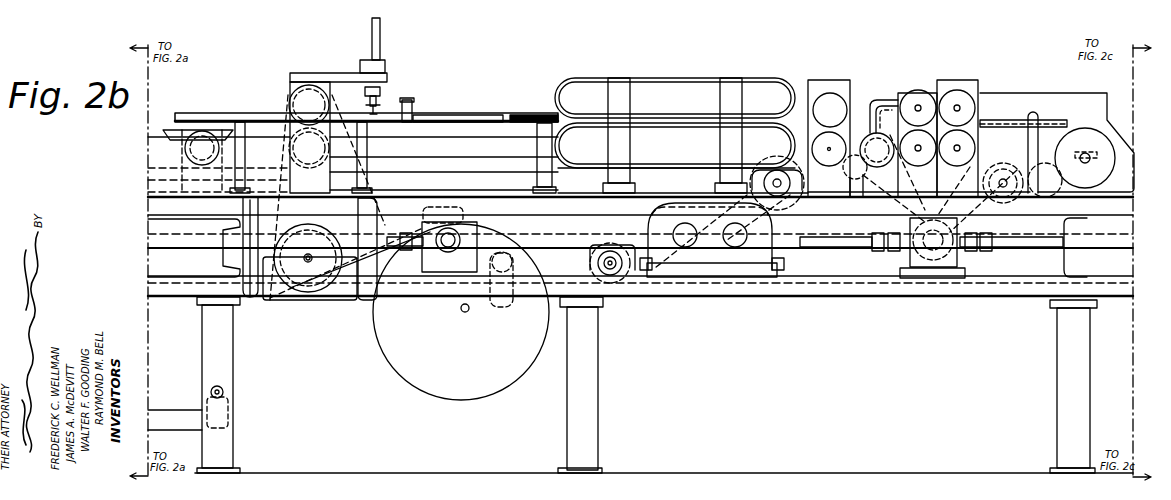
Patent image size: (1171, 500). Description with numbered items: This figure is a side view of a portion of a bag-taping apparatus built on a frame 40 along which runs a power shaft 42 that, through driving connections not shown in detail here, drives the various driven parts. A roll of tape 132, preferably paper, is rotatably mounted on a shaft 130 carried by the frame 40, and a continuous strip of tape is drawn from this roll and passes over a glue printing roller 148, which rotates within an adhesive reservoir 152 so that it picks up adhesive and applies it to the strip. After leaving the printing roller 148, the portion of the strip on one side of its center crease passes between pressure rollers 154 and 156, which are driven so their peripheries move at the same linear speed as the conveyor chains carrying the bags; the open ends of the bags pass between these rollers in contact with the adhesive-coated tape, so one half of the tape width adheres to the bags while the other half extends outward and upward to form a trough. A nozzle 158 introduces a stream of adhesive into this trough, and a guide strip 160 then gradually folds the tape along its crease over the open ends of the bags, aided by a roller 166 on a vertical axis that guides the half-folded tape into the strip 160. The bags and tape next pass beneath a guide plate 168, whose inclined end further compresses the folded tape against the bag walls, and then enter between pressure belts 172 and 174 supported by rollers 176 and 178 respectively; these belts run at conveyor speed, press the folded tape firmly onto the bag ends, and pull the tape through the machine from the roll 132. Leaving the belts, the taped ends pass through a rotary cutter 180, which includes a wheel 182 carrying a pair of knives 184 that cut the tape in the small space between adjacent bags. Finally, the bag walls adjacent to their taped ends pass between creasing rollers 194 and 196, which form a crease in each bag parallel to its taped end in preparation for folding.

The frame 40 is at (786, 297).
The power shaft 42 is at (1094, 250).
The shaft 130 is at (468, 312).
The roll of tape 132 is at (432, 392).
The glue printing roller 148 is at (311, 224).
The adhesive reservoir 152 is at (274, 298).
The pressure roller 154 is at (290, 100).
The pressure roller 156 is at (292, 152).
The nozzle 158 is at (371, 105).
The guide strip 160 is at (446, 115).
The roller 166 is at (412, 108).
The guide plate 168 is at (536, 115).
The pressure belt 172 is at (702, 78).
The pressure belt 174 is at (643, 164).
The rollers 176 is at (574, 82).
The rollers 178 is at (565, 145).
The rotary cutter 180 is at (846, 77).
The wheel 182 is at (853, 93).
The knives 184 is at (815, 131).
The creasing roller 194 is at (982, 98).
The creasing roller 196 is at (984, 158).